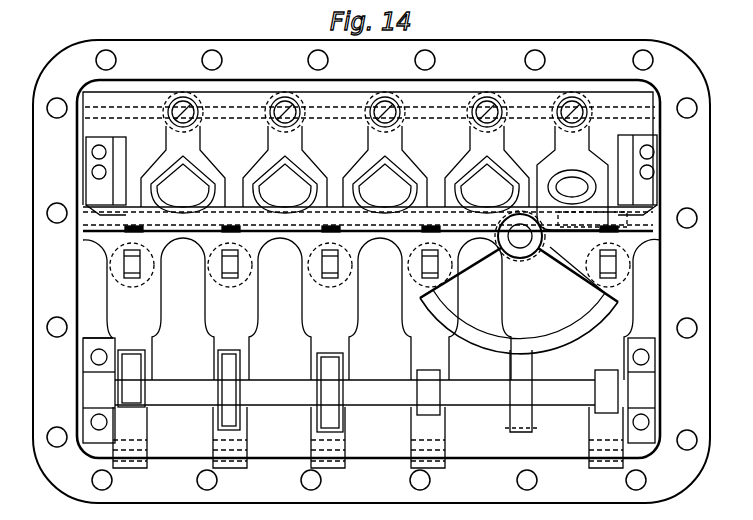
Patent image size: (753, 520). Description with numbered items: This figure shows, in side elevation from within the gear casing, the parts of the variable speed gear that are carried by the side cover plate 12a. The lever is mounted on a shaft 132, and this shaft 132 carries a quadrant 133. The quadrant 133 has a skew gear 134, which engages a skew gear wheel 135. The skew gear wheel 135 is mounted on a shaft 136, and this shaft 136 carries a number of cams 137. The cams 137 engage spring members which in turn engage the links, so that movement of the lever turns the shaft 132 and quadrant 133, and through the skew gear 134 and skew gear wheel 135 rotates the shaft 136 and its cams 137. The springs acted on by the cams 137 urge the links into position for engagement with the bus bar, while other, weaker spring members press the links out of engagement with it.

The cover plate 12a is at (477, 60).
The shaft 132 is at (522, 240).
The quadrant 133 is at (498, 338).
The skew gear 134 is at (442, 285).
The skew gear wheel 135 is at (520, 430).
The shaft 136 is at (461, 390).
The cams 137 is at (213, 378).